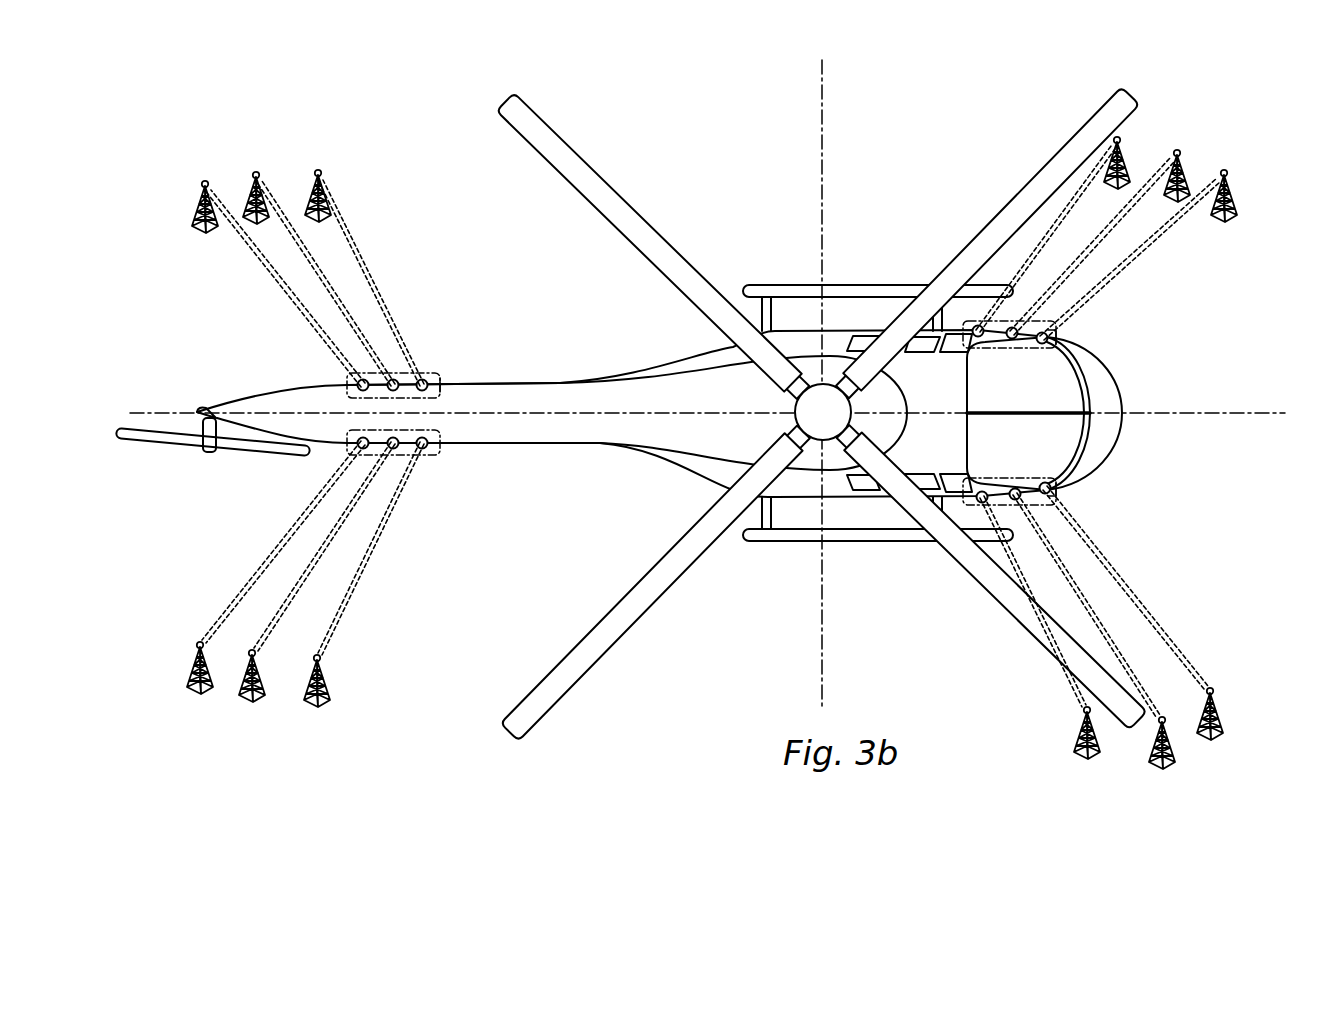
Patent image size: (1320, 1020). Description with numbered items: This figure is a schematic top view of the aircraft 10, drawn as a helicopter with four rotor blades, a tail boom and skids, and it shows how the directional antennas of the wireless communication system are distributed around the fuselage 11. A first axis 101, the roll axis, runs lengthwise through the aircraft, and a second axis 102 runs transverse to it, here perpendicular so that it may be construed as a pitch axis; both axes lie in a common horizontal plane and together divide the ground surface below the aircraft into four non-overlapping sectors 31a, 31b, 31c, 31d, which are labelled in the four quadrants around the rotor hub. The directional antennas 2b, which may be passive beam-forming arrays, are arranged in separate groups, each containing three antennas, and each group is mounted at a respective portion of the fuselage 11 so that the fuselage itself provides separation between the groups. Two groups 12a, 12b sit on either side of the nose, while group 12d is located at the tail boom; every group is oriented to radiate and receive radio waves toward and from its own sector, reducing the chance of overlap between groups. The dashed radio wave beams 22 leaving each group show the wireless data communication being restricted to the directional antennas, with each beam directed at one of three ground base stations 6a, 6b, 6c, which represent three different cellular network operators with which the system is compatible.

The aircraft 10 is at (675, 150).
The first axis 101 is at (150, 411).
The second axis 102 is at (823, 90).
The fuselage 11 is at (637, 368).
The group of directional antennas 12a is at (1057, 338).
The group of directional antennas 12b is at (1057, 490).
The group of directional antennas 12d is at (441, 383).
The directional antenna 2b is at (356, 381).
The radio wave beams 22 is at (390, 258).
The ground base station 6a is at (196, 200).
The ground base station 6b is at (248, 195).
The ground base station 6c is at (314, 182).
The non-overlapping sector 31a is at (888, 112).
The non-overlapping sector 31b is at (901, 637).
The non-overlapping sector 31c is at (753, 634).
The non-overlapping sector 31d is at (754, 112).